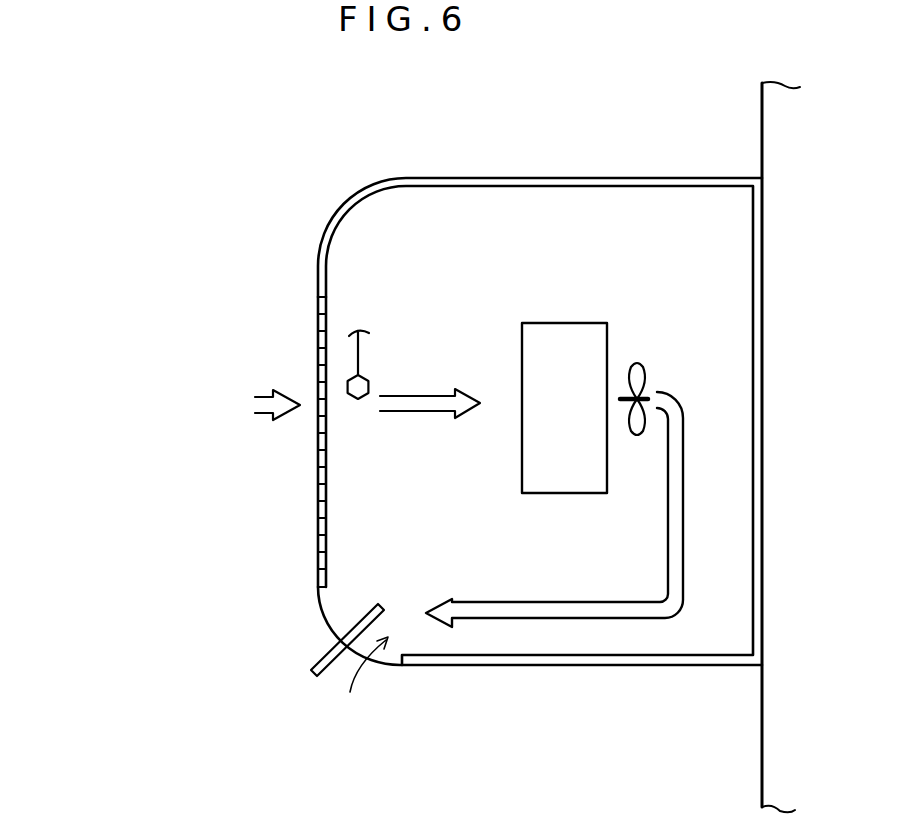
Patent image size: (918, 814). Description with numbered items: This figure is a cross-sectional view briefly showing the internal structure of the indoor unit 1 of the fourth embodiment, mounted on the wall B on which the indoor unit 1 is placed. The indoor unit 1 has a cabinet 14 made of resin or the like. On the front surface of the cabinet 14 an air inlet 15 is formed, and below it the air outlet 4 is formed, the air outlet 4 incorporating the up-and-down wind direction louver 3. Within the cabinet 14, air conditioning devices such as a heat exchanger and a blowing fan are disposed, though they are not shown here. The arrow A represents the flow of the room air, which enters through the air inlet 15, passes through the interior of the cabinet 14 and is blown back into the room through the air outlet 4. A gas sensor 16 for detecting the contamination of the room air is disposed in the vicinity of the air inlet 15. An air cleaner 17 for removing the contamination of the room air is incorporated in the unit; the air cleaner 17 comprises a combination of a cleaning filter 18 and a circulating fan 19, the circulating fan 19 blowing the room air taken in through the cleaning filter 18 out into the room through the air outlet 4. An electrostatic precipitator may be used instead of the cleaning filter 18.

The indoor unit 1 is at (479, 158).
The cabinet 14 is at (547, 178).
The air inlet 15 is at (318, 375).
The gas sensor 16 is at (369, 382).
The air cleaner 17 is at (586, 100).
The cleaning filter 18 is at (590, 323).
The circulating fan 19 is at (643, 363).
The up-and-down wind direction louver 3 is at (332, 656).
The air outlet 4 is at (360, 680).
The arrow representing the flow of the room air A is at (428, 412).
The wall B is at (762, 753).